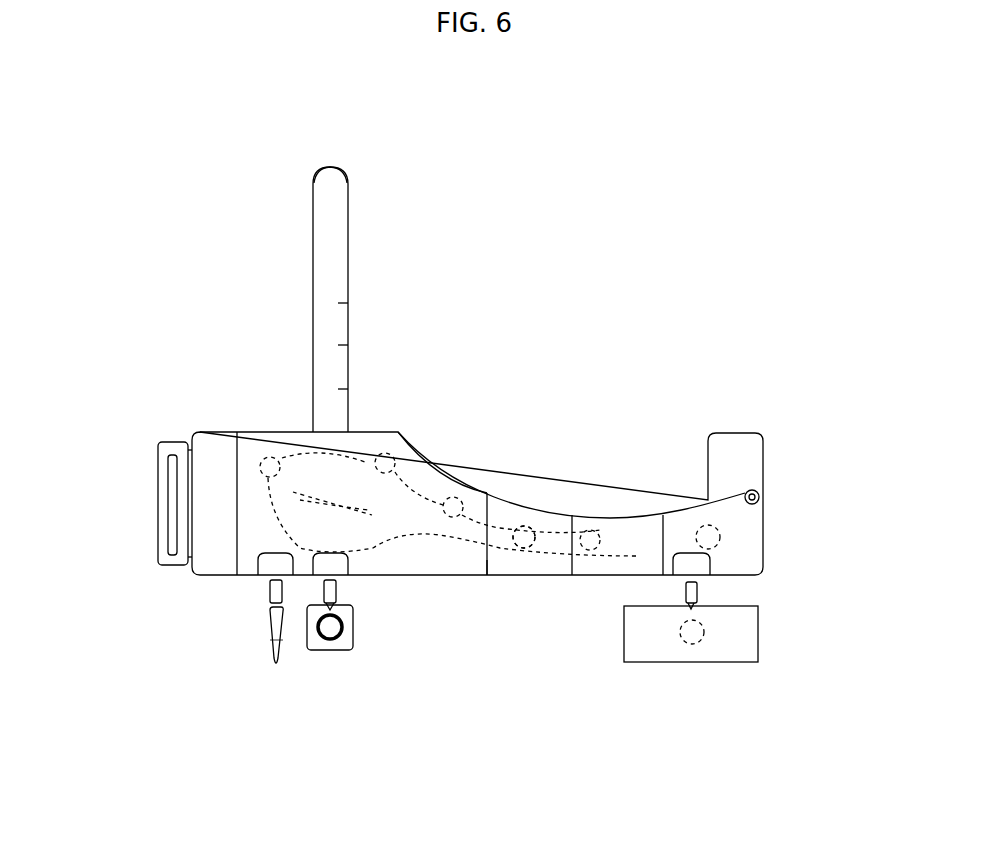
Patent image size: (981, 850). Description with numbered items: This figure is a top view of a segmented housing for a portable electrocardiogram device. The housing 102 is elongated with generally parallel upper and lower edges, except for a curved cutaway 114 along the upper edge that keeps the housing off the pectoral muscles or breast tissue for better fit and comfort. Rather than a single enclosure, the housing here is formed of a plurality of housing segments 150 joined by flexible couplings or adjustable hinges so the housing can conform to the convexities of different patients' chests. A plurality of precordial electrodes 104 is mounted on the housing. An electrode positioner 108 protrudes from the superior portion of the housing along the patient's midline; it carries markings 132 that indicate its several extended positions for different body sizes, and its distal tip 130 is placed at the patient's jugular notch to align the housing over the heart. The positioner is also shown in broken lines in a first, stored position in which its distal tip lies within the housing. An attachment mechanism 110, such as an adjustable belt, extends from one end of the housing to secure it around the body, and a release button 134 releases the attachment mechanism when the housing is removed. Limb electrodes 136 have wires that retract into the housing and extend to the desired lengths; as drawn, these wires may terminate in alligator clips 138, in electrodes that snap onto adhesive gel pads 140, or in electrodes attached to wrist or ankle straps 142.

The housing 102 is at (255, 430).
The electrodes 104 is at (523, 533).
The electrode positioner 108 is at (348, 210).
The attachment mechanism 110 is at (158, 507).
The curved cutaway 114 is at (432, 460).
The distal tip of the electrode positioner 130 is at (337, 167).
The markings on the electrode positioner 132 is at (338, 303).
The release button 134 is at (760, 497).
The limb electrodes 136 is at (293, 679).
The alligator clips 138 is at (268, 645).
The adhesive gel pads 140 is at (346, 627).
The wrist or ankle straps 142 is at (750, 632).
The housing segments 150 is at (467, 565).